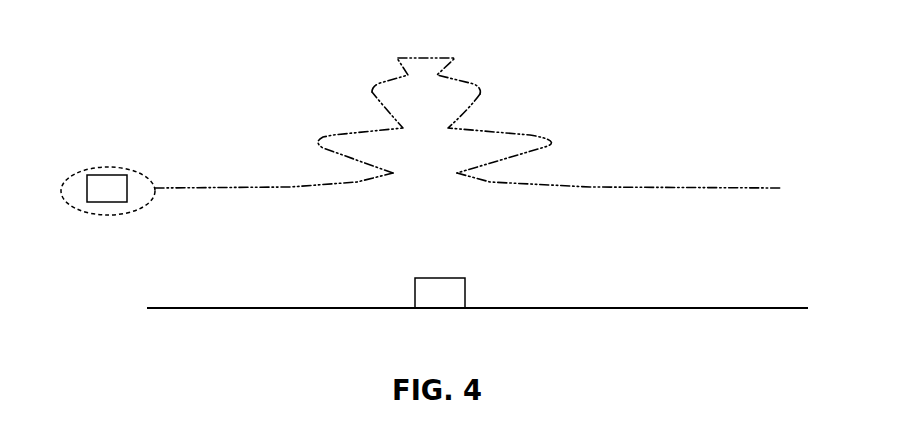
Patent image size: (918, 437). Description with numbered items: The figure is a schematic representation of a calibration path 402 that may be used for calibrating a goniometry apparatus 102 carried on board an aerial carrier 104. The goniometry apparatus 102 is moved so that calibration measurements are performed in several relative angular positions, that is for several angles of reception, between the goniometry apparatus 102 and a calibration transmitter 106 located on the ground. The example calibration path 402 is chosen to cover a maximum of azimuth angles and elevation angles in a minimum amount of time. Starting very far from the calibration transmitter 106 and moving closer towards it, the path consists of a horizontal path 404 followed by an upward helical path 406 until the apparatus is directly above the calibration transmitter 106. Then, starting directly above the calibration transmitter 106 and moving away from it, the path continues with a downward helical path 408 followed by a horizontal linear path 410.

The goniometry apparatus 102 is at (117, 196).
The aerial carrier 104 is at (110, 167).
The calibration transmitter 106 is at (454, 300).
The calibration path 402 is at (467, 110).
The horizontal path 404 is at (277, 191).
The upward helical path 406 is at (343, 135).
The downward helical path 408 is at (538, 135).
The horizontal linear path 410 is at (670, 188).